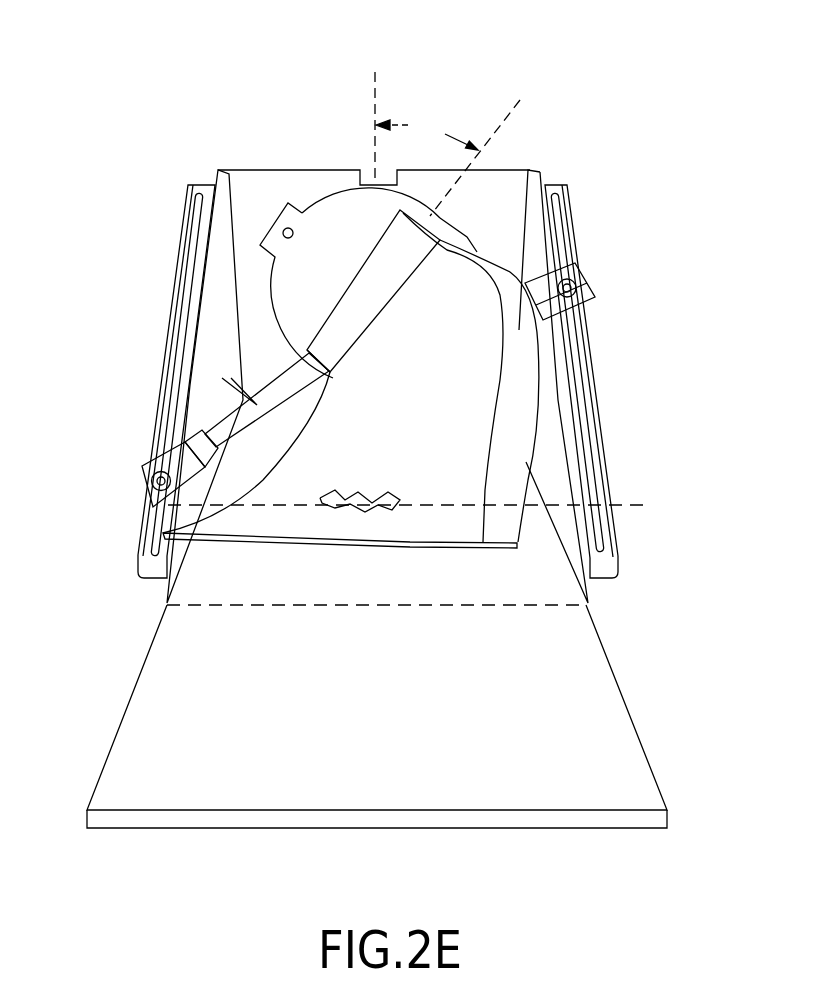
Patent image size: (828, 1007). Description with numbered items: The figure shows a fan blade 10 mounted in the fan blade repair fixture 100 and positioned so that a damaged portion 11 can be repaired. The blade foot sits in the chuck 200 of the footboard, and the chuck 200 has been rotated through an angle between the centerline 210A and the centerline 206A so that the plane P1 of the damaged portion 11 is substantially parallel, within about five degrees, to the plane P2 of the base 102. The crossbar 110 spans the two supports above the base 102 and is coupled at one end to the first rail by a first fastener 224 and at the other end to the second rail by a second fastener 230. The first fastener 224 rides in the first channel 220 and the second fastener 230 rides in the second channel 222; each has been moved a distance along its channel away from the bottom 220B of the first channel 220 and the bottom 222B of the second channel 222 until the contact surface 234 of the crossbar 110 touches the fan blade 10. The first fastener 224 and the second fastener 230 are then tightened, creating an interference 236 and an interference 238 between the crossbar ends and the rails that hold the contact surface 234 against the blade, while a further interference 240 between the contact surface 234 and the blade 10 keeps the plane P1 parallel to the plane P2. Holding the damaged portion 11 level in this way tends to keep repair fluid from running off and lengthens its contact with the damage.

The fixture 100 is at (612, 54).
The centerline 210A is at (378, 78).
The centerline 206A is at (497, 130).
The chuck 200 is at (352, 243).
The fan blade 10 is at (428, 366).
The crossbar 110 is at (270, 440).
The damaged portion 11 is at (362, 496).
The second channel 222 is at (168, 340).
The bottom of second channel 222B is at (138, 553).
The first channel 220 is at (579, 398).
The bottom of first channel 220B is at (600, 549).
The interference 238 is at (150, 460).
The second fastener 230 is at (150, 481).
The contact surface 234 is at (300, 392).
The interference 240 is at (345, 378).
The interference 236 is at (596, 298).
The first fastener 224 is at (574, 280).
The plane of damaged portion P1 is at (419, 505).
The plane of base P2 is at (522, 608).
The base 102 is at (395, 709).